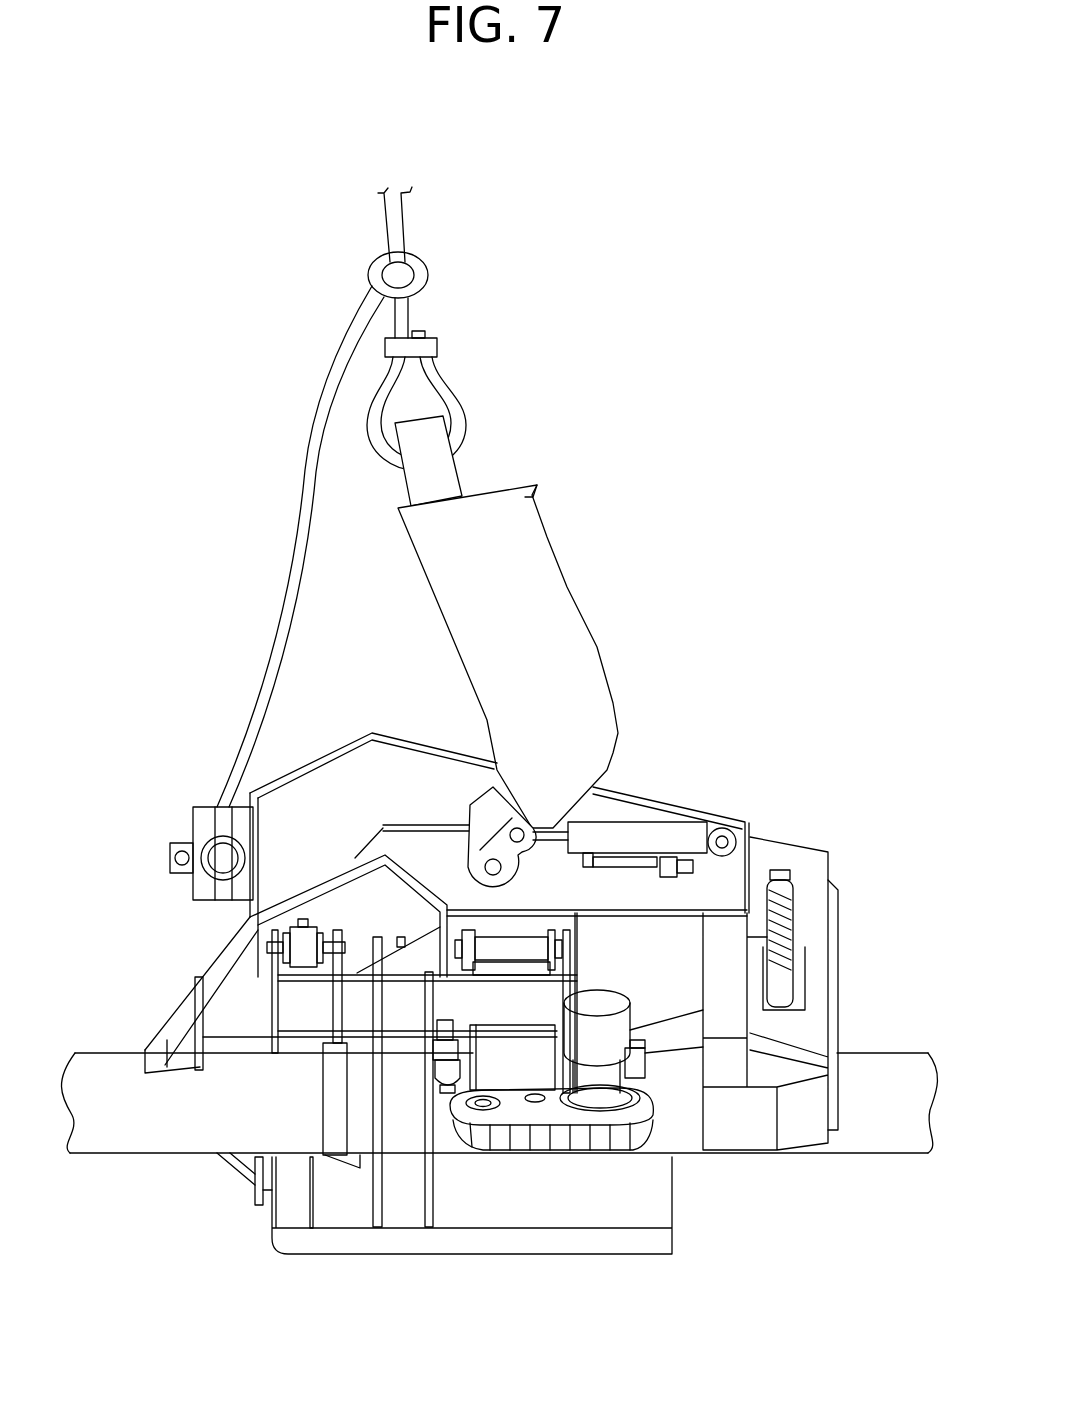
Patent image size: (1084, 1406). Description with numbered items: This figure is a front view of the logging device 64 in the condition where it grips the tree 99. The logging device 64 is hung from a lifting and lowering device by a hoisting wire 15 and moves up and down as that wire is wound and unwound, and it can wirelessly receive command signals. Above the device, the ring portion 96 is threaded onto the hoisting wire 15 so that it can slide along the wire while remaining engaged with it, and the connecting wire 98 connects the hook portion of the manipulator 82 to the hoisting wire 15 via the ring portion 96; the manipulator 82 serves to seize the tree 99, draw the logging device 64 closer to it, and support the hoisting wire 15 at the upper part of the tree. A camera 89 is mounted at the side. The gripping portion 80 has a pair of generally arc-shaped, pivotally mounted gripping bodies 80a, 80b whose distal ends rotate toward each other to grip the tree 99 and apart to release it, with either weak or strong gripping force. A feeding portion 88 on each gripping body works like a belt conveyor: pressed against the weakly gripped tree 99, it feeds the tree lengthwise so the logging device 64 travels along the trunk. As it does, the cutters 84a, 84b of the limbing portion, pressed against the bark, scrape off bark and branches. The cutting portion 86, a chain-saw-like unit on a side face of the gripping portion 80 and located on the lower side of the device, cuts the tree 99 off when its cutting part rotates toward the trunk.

The hoisting wire 15 is at (396, 216).
The ring portion 96 is at (423, 276).
The connecting wire 98 is at (290, 567).
The logging device 64 is at (701, 763).
The manipulator 82 is at (203, 831).
The camera 89 is at (170, 856).
The cutter 84a is at (180, 1032).
The cutting portion 86 is at (818, 1010).
The tree 99 is at (884, 1130).
The gripping portion 80 is at (664, 1270).
The gripping body 80a is at (433, 1187).
The gripping body 80b is at (267, 1220).
The cutter 84b is at (241, 1178).
The feeding portion 88 is at (532, 1133).